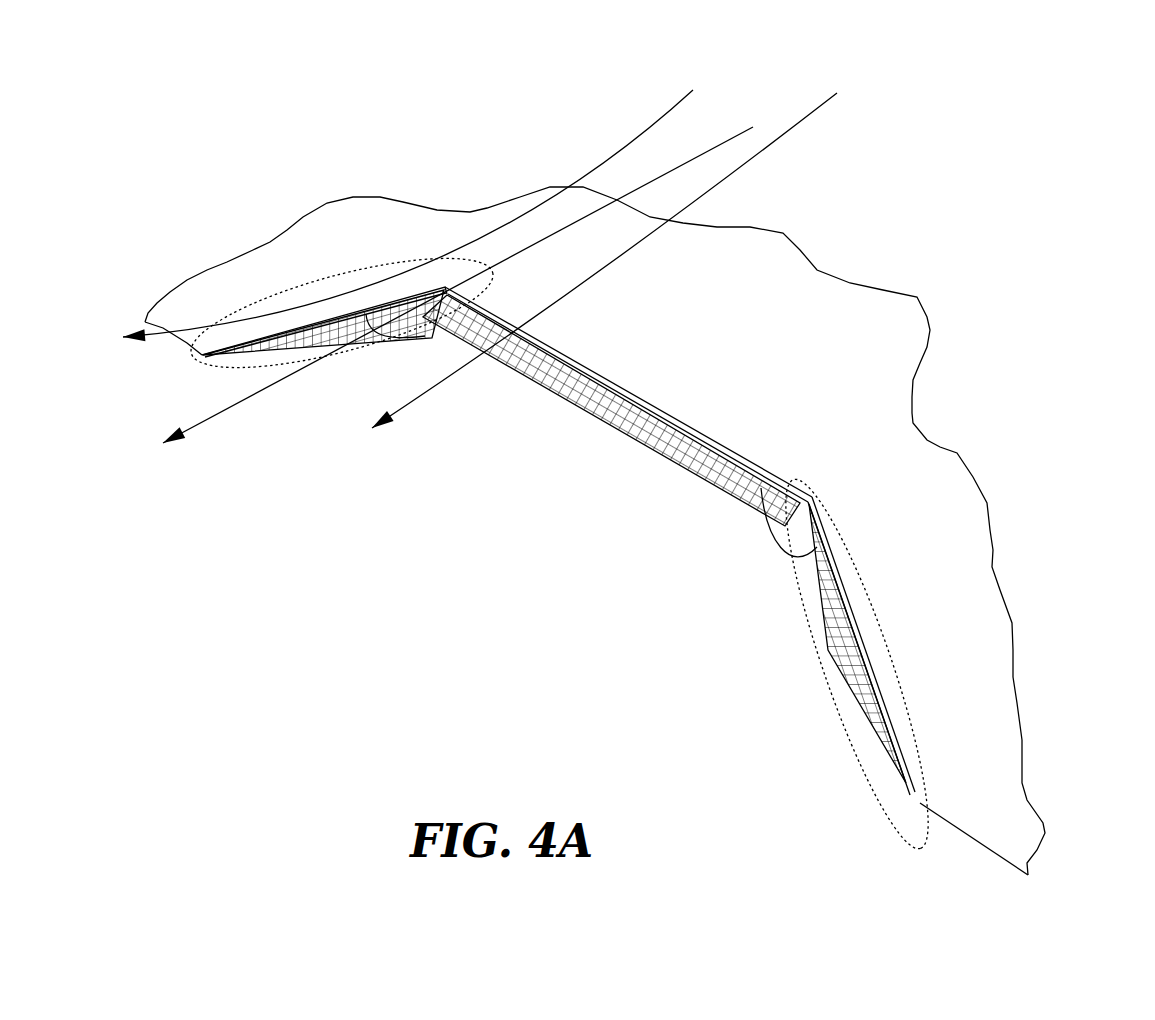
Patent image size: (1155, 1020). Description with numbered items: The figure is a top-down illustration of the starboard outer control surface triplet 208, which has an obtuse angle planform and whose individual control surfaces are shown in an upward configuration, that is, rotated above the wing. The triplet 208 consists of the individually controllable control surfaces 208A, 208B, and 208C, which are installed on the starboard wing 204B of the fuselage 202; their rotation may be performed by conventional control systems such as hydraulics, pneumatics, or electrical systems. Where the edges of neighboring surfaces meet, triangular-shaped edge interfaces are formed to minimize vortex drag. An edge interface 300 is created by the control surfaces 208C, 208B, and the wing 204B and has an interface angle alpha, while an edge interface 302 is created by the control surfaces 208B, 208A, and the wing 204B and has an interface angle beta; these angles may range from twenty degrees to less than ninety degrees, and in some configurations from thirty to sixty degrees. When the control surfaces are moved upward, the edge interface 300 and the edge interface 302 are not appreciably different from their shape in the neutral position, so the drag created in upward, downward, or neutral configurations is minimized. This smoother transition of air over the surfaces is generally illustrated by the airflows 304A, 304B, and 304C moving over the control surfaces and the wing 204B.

The fuselage 202 is at (742, 372).
The starboard wing 204B is at (903, 567).
The starboard outer control surface triplet 208 is at (535, 541).
The control surface 208A is at (840, 630).
The control surface 208B is at (622, 408).
The control surface 208C is at (340, 348).
The edge interface 300 is at (437, 257).
The edge interface 302 is at (827, 493).
The airflow 304A is at (429, 204).
The airflow 304B is at (477, 267).
The airflow 304C is at (625, 251).